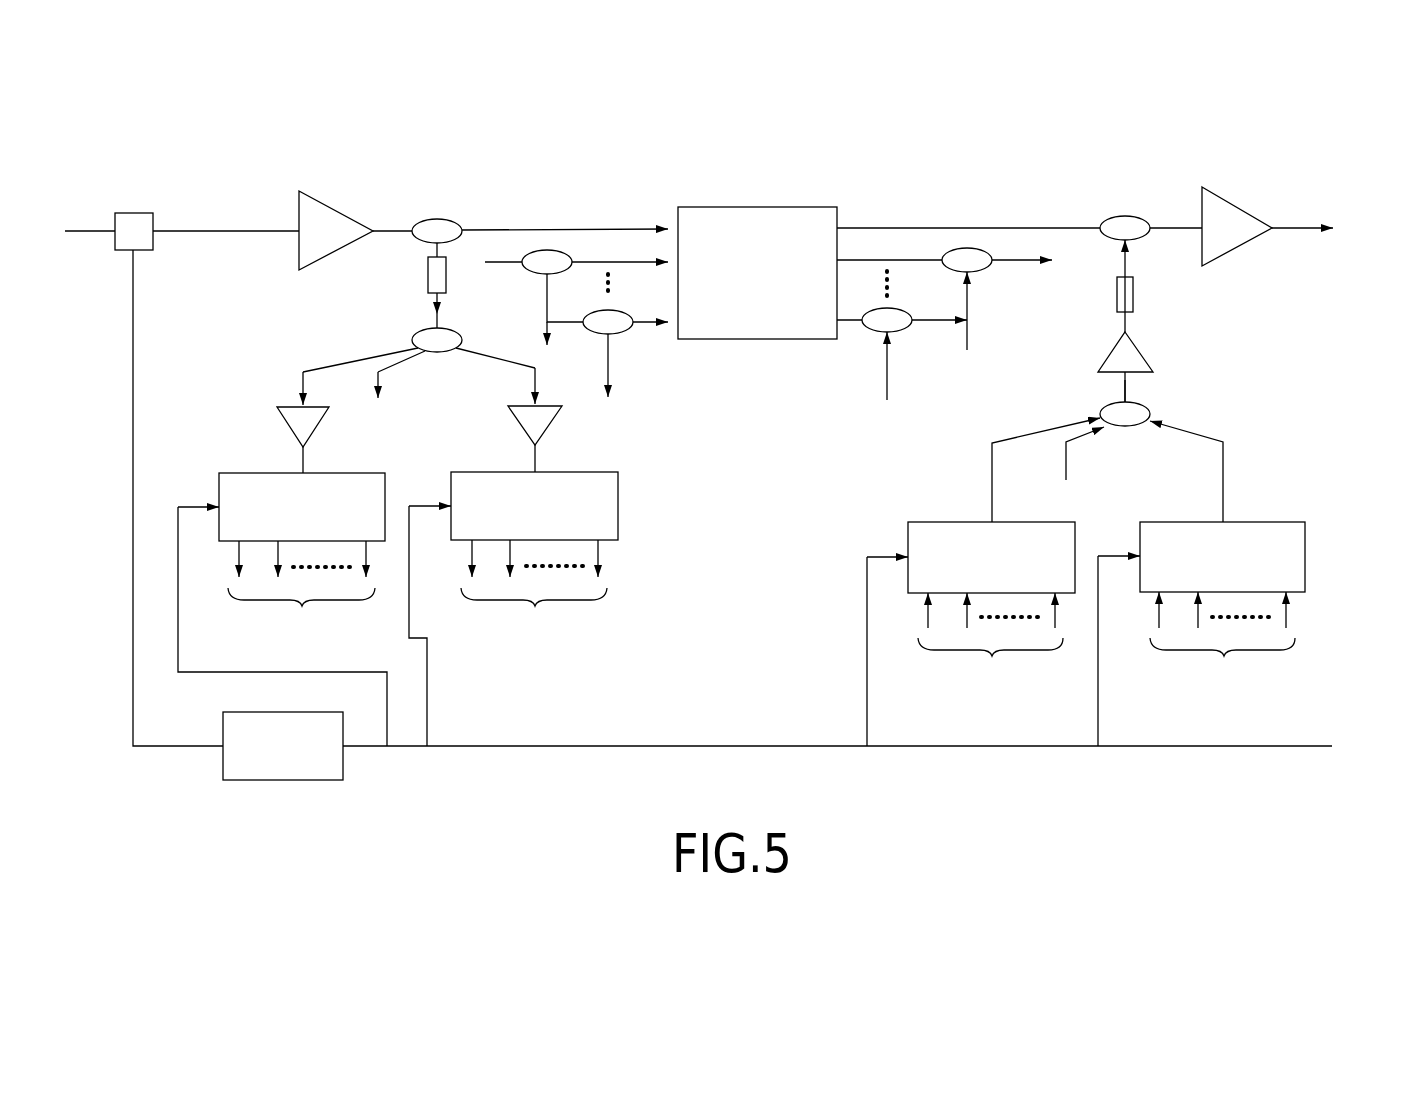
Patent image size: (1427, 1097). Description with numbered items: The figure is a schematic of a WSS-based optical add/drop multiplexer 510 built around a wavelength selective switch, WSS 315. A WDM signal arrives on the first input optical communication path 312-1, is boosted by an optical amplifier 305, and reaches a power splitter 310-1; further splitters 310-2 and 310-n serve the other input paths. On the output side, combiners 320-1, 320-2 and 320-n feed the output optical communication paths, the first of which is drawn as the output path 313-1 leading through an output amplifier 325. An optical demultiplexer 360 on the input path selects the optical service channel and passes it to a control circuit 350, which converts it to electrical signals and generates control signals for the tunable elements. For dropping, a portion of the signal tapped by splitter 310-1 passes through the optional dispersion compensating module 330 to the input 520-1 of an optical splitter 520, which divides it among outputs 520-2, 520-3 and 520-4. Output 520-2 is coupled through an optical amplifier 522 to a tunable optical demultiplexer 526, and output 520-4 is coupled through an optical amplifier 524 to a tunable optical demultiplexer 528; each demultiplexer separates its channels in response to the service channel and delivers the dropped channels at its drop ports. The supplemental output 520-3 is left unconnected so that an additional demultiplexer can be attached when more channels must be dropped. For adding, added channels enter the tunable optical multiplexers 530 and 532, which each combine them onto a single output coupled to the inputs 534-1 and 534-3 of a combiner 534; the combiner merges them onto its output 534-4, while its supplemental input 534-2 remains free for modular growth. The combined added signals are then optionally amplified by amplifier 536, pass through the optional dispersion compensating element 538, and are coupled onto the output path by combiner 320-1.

The optical amplifier 305 is at (341, 212).
The power splitter 310-1 is at (421, 221).
The power splitter 310-2 is at (537, 250).
The power splitter 310-n is at (622, 335).
The first input optical communication path 312-1 is at (229, 231).
The output fiber 313-1 is at (1178, 228).
The WSS 315 is at (728, 207).
The combiner 320-1 is at (1108, 218).
The combiner 320-2 is at (967, 248).
The combiner 320-n is at (872, 332).
The output optical amplifier 325 is at (1235, 200).
The dispersion compensating module 330 is at (447, 280).
The control circuit 350 is at (243, 780).
The optical demultiplexer 360 is at (133, 213).
The optical add/drop multiplexer 510 is at (417, 827).
The optical splitter 520 is at (412, 340).
The input 520-1 is at (432, 311).
The output 520-2 is at (301, 370).
The supplemental output 520-3 is at (383, 375).
The output 520-4 is at (533, 372).
The optical amplifier 522 is at (288, 432).
The optical amplifier 524 is at (548, 418).
The tunable optical demultiplexer 526 is at (219, 480).
The tunable optical demultiplexer 528 is at (618, 500).
The tunable optical multiplexer 530 is at (908, 530).
The tunable optical multiplexer 532 is at (1305, 548).
The combiner 534 is at (1100, 412).
The input 534-1 is at (990, 445).
The supplemental input 534-2 is at (1068, 445).
The input 534-3 is at (1225, 442).
The output 534-4 is at (1130, 395).
The amplifier 536 is at (1100, 352).
The dispersion compensating element 538 is at (1117, 290).